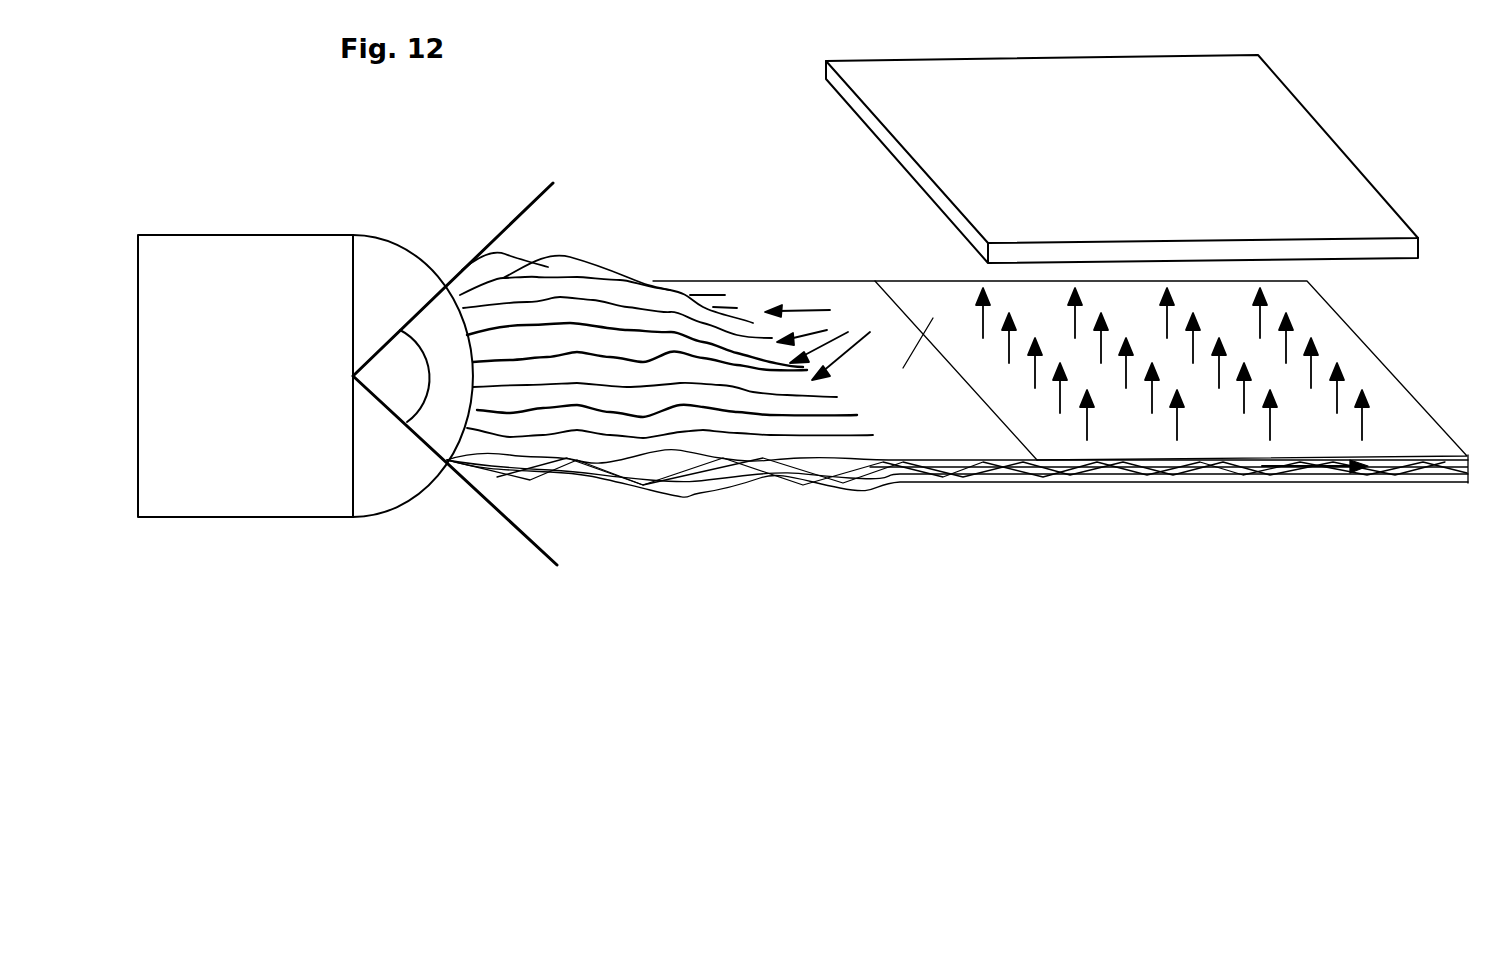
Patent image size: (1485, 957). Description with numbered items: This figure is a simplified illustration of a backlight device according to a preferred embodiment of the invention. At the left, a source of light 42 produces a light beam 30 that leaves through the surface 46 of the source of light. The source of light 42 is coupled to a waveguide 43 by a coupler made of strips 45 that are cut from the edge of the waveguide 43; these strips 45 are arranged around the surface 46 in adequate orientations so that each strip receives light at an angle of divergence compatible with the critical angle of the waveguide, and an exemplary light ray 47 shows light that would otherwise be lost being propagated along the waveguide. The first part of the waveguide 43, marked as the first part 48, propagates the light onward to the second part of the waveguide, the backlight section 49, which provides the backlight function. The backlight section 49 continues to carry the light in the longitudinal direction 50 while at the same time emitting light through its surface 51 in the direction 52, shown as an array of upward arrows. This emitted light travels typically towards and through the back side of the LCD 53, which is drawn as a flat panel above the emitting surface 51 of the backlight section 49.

The light beam 30 is at (352, 376).
The source of light 42 is at (292, 234).
The waveguide 43 is at (838, 281).
The strips 45 is at (820, 339).
The surface of the source of light 46 is at (380, 249).
The exemplary light ray 47 is at (997, 481).
The first part of the waveguide 48 is at (930, 331).
The second part of the waveguide (backlight section) 49 is at (1128, 482).
The longitudinal direction 50 is at (1240, 481).
The emitting surface 51 is at (1348, 352).
The emission direction 52 is at (1363, 414).
The LCD 53 is at (857, 112).